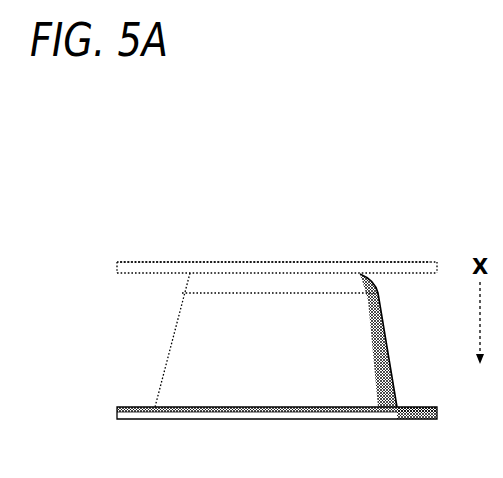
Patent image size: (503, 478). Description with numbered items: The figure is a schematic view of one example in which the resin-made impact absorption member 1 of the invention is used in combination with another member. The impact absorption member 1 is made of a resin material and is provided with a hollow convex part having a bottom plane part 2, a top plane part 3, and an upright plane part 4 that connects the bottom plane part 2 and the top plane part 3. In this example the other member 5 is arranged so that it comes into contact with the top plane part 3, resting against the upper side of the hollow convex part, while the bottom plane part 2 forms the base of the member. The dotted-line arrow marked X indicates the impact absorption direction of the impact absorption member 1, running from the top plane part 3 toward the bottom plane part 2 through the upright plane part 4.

The resin-made impact absorption member 1 is at (358, 226).
The bottom plane part 2 is at (160, 411).
The top plane part 3 is at (280, 272).
The upright plane part 4 is at (178, 365).
The other member 5 is at (155, 258).